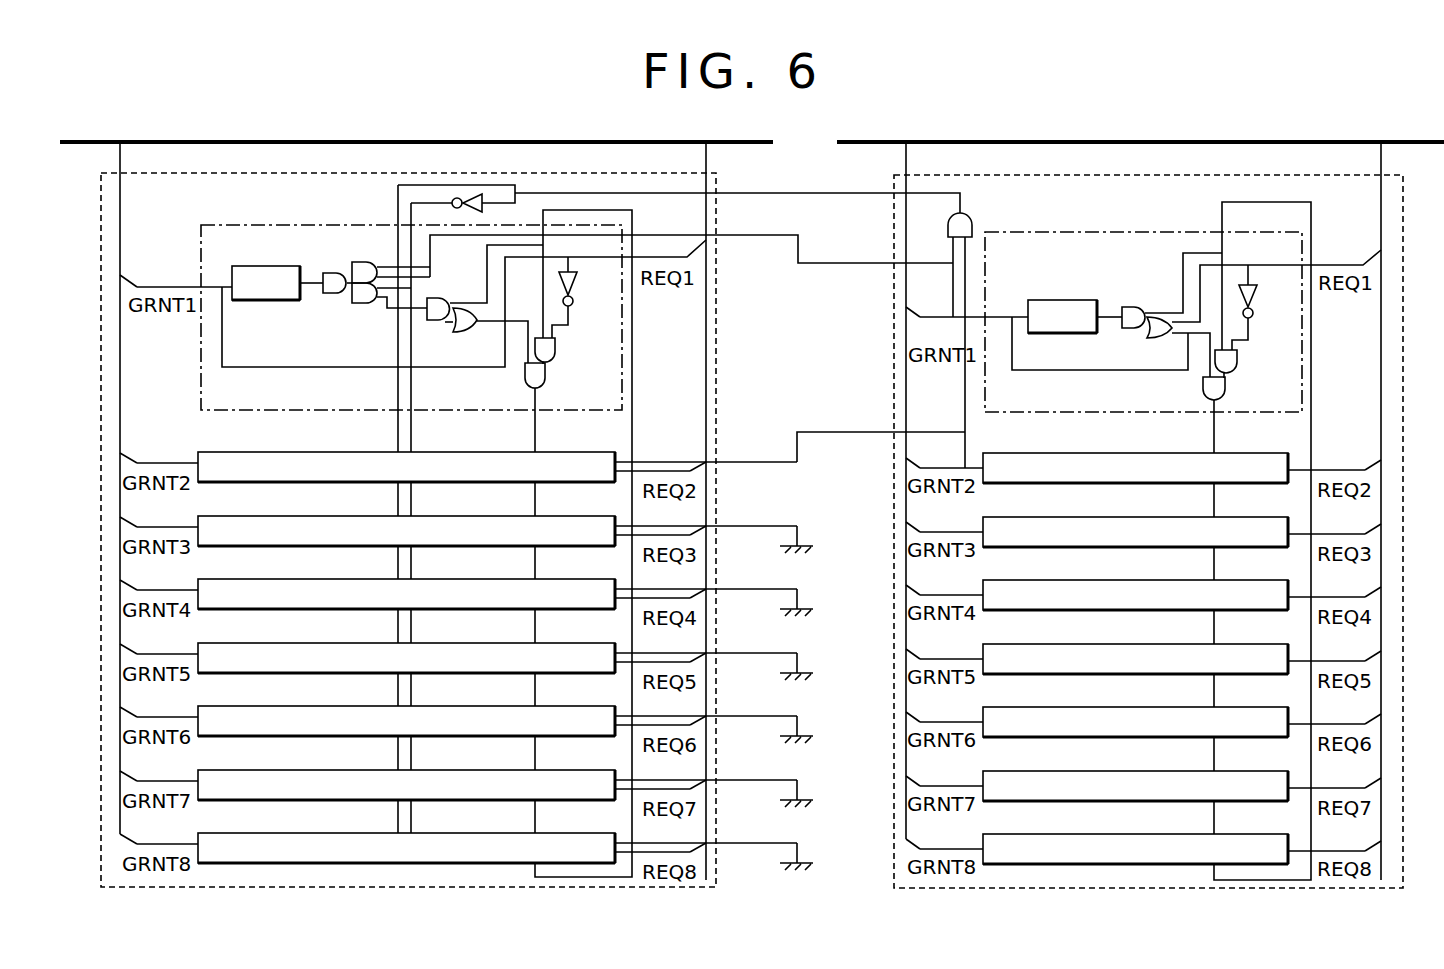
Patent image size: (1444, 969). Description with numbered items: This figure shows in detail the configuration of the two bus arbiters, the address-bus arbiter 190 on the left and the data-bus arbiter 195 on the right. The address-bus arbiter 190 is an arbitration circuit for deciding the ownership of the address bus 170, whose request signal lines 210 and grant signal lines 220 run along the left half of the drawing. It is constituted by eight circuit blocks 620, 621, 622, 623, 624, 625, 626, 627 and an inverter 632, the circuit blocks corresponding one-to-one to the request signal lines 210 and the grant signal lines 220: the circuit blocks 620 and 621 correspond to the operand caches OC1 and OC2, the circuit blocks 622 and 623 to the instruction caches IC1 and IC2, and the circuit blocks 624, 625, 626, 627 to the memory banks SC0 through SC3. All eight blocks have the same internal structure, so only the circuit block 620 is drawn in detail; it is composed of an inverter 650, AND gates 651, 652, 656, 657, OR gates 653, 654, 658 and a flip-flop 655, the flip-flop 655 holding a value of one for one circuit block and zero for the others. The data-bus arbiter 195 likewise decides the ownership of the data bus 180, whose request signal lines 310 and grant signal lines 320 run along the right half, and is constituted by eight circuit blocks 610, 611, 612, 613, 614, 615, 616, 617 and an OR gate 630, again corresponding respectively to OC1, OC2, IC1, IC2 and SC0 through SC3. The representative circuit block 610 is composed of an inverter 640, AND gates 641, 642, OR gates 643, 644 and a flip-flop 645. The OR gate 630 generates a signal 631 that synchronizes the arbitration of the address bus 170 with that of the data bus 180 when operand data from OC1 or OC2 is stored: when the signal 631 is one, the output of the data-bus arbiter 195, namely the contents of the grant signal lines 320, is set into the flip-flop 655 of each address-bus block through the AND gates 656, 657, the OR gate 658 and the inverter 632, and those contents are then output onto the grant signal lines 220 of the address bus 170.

The address bus 170 is at (416, 129).
The data bus 180 is at (1140, 129).
The address-bus arbiter 190 is at (583, 512).
The data-bus arbiter 195 is at (1276, 514).
The request signal lines 210 is at (735, 511).
The grant signal lines 220 is at (91, 488).
The request signal lines 310 is at (1409, 511).
The grant signal lines 320 is at (876, 490).
The circuit block 610 is at (1143, 309).
The circuit block 611 is at (1135, 456).
The circuit block 612 is at (1135, 520).
The circuit block 613 is at (1135, 583).
The circuit block 614 is at (1135, 647).
The circuit block 615 is at (1135, 710).
The circuit block 616 is at (1135, 774).
The circuit block 617 is at (1135, 837).
The circuit block 620 is at (411, 304).
The circuit block 621 is at (406, 451).
The circuit block 622 is at (406, 515).
The circuit block 623 is at (406, 578).
The circuit block 624 is at (406, 642).
The circuit block 625 is at (406, 705).
The circuit block 626 is at (406, 769).
The circuit block 627 is at (406, 832).
The OR gate 630 is at (980, 332).
The signal 631 is at (737, 191).
The inverter 632 is at (448, 196).
The inverter 640 is at (1263, 307).
The AND gate 641 is at (1250, 363).
The AND gate 642 is at (1159, 290).
The OR gate 643 is at (1262, 313).
The OR gate 644 is at (1238, 393).
The flip-flop 645 is at (1062, 303).
The inverter 650 is at (582, 297).
The AND gate 651 is at (567, 349).
The AND gate 652 is at (485, 282).
The OR gate 653 is at (486, 335).
The OR gate 654 is at (555, 380).
The flip-flop 655 is at (266, 270).
The AND gate 656 is at (385, 259).
The AND gate 657 is at (386, 309).
The OR gate 658 is at (326, 300).